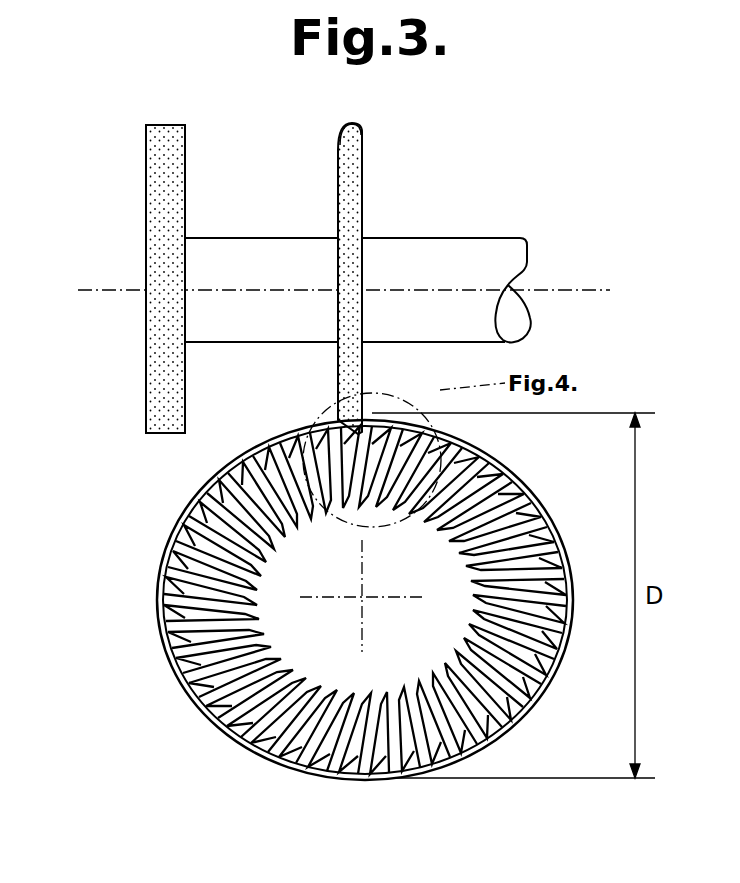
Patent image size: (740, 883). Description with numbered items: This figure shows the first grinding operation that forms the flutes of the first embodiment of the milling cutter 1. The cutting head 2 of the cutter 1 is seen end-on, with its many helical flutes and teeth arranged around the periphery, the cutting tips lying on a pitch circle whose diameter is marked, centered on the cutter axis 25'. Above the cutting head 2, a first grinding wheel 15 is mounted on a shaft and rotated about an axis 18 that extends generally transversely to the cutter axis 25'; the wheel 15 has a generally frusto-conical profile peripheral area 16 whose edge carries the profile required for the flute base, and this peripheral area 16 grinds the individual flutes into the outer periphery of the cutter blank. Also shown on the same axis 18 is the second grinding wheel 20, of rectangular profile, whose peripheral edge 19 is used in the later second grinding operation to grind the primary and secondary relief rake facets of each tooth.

The milling cutter 1 is at (255, 768).
The cutting head 2 is at (204, 551).
The first grinding wheel 15 is at (364, 184).
The frusto-conical profile peripheral area 16 is at (350, 128).
The axis 18 is at (568, 283).
The peripheral edge 19 is at (162, 125).
The second grinding wheel 20 is at (146, 193).
The axis of rotation 25' is at (359, 596).